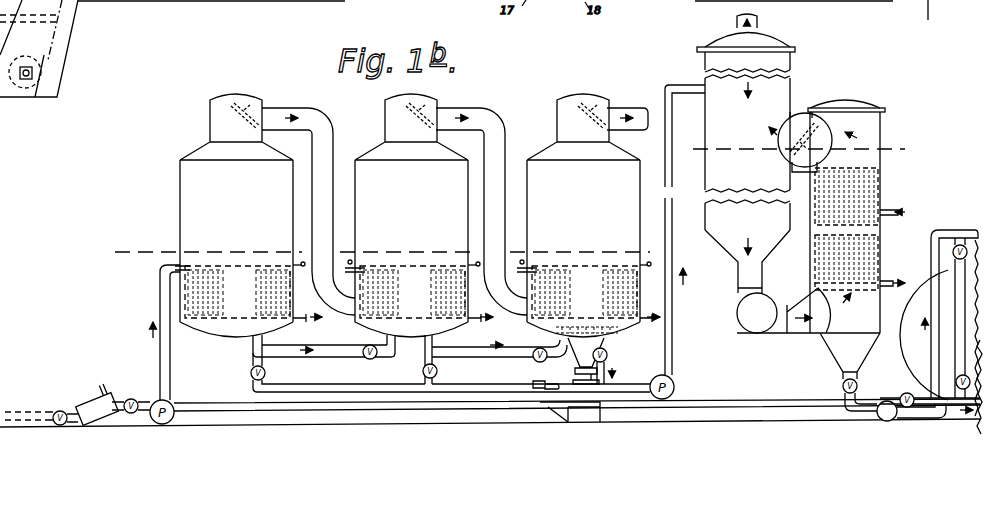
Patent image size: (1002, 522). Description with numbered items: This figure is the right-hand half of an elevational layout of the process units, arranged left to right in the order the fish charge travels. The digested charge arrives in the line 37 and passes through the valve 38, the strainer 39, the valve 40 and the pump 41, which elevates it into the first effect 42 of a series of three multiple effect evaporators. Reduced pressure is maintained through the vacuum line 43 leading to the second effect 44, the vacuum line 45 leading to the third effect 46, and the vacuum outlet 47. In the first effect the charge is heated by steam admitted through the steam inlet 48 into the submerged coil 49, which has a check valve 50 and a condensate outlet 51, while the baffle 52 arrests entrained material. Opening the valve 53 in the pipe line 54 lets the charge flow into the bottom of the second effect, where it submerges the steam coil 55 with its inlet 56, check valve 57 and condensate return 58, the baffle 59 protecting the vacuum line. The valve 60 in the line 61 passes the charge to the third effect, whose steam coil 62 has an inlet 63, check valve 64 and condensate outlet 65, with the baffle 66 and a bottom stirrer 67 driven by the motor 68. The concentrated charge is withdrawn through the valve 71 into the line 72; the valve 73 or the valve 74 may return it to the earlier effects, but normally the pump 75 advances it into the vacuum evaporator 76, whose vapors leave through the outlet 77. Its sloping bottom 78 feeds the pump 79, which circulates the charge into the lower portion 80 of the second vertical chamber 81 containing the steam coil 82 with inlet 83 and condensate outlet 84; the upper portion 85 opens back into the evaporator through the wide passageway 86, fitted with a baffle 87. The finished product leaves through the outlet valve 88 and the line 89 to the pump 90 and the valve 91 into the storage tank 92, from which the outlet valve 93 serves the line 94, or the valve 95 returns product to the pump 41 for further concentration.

The line 37 is at (45, 410).
The valve 38 is at (62, 410).
The strainer 39 is at (98, 390).
The valve 40 is at (133, 398).
The pump 41 is at (173, 405).
The first effect 42 is at (180, 188).
The vacuum line 43 is at (306, 112).
The second effect 44 is at (457, 172).
The vacuum line 45 is at (475, 112).
The third effect 46 is at (633, 172).
The vacuum outlet 47 is at (630, 110).
The steam inlet 48 is at (178, 270).
The coil 49 is at (185, 298).
The check valve 50 is at (303, 270).
The outlet 51 is at (304, 320).
The baffle 52 is at (243, 120).
The valve 53 is at (368, 360).
The pipe line 54 is at (292, 365).
The steam coil 55 is at (377, 262).
The inlet 56 is at (350, 261).
The check valve 57 is at (472, 272).
The condensate return 58 is at (473, 320).
The baffle 59 is at (418, 120).
The valve 60 is at (538, 348).
The line 61 is at (470, 355).
The steam coil 62 is at (549, 262).
The inlet 63 is at (522, 261).
The check valve 64 is at (642, 268).
The condensate outlet 65 is at (648, 320).
The baffle 66 is at (590, 120).
The stirrer 67 is at (615, 333).
The motor 68 is at (550, 384).
The valve 71 is at (607, 353).
The line 72 is at (500, 392).
The valve 73 is at (423, 371).
The valve 74 is at (251, 373).
The pump 75 is at (675, 388).
The vacuum evaporator 76 is at (792, 86).
The outlet 77 is at (758, 22).
The sloping bottom 78 is at (722, 252).
The pump 79 is at (737, 315).
The lower portion 80 is at (815, 330).
The second vertical chamber 81 is at (815, 258).
The steam coil 82 is at (890, 180).
The inlet 83 is at (893, 209).
The condensate outlet 84 is at (890, 281).
The upper portion 85 is at (882, 136).
The passageway 86 is at (800, 116).
The baffle 87 is at (803, 130).
The outlet valve 88 is at (842, 386).
The line 89 is at (848, 405).
The pump 90 is at (888, 421).
The valve 91 is at (952, 252).
The storage tank 92 is at (898, 356).
The outlet valve 93 is at (961, 375).
The line 94 is at (947, 418).
The valve 95 is at (903, 395).